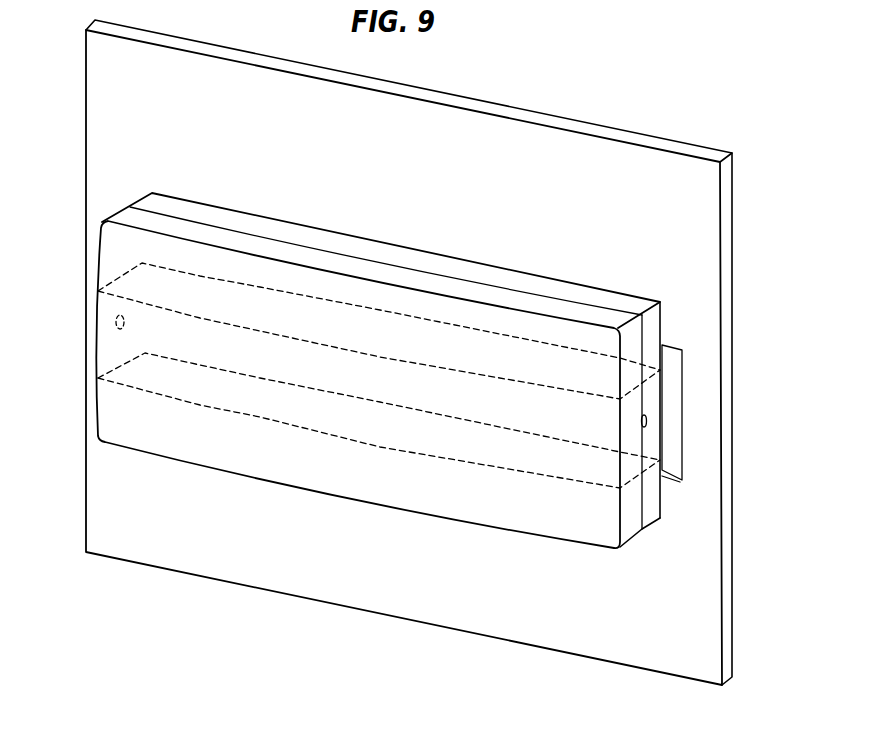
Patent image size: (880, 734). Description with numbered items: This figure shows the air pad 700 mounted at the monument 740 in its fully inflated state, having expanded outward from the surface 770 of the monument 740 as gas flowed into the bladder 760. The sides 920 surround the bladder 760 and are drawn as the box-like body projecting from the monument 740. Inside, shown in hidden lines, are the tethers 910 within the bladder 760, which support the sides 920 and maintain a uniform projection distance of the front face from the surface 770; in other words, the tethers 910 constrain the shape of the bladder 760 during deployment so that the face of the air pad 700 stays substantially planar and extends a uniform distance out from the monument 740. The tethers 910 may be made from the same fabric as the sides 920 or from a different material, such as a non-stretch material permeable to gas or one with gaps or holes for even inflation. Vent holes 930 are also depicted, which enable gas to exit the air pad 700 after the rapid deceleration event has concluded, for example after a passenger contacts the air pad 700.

The air pad 700 is at (413, 352).
The monument 740 is at (446, 352).
The bladder 760 is at (284, 281).
The surface 770 is at (700, 631).
The tethers 910 is at (230, 414).
The sides 920 is at (404, 359).
The vent holes 930 is at (647, 422).